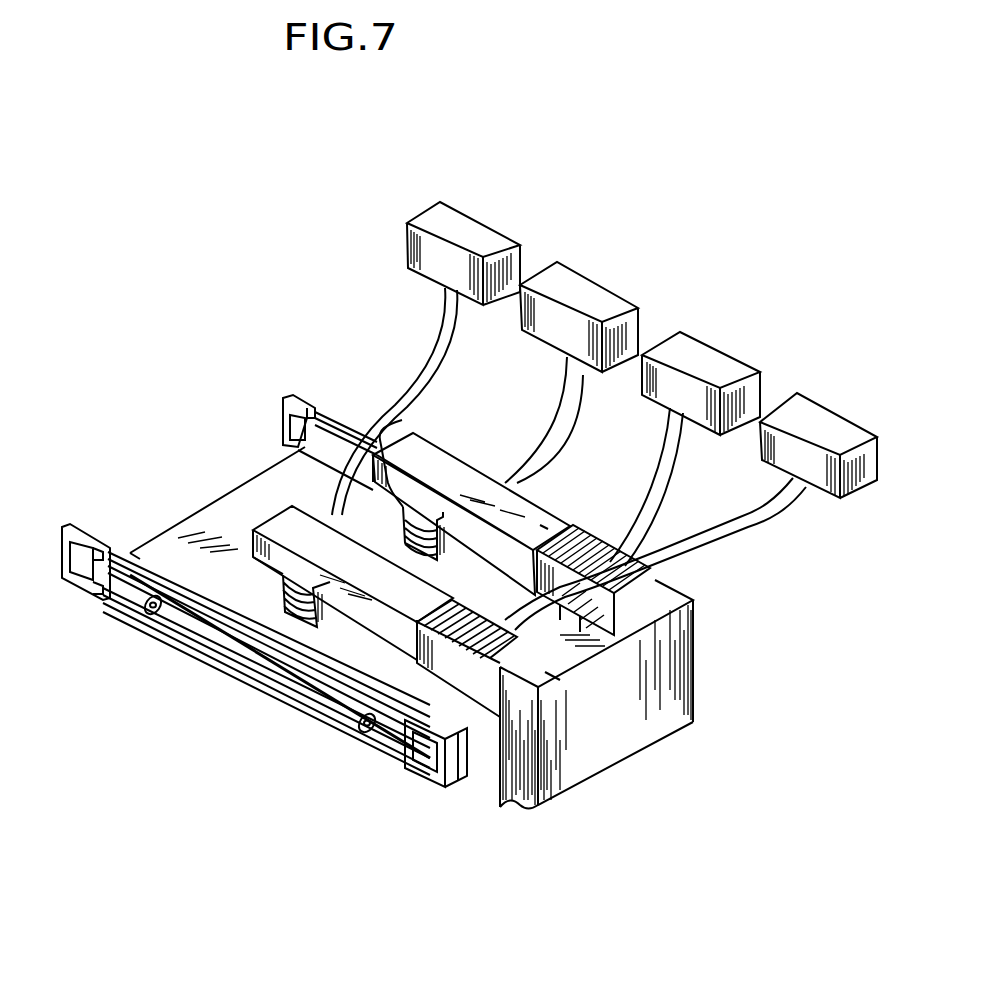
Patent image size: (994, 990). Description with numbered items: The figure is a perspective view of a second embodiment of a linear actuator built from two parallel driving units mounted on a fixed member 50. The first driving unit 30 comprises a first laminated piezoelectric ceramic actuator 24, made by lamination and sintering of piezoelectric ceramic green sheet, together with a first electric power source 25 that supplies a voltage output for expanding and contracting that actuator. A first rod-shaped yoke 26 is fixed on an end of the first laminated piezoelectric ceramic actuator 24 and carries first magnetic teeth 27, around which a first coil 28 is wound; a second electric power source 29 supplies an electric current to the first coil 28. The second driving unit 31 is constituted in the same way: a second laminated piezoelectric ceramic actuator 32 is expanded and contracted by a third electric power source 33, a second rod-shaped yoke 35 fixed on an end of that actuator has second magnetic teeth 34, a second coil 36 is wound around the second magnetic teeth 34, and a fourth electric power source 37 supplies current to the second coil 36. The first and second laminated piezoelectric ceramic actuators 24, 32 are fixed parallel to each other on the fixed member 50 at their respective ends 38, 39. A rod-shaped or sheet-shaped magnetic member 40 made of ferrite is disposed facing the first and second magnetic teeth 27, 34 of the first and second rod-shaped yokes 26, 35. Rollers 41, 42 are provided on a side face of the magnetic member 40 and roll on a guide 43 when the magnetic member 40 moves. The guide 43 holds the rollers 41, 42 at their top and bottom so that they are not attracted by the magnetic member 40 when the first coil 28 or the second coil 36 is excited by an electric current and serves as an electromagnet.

The first laminated piezoelectric ceramic actuator 24 is at (453, 658).
The first electric power source 25 is at (732, 378).
The first rod-shaped yoke 26 is at (369, 598).
The first magnetic teeth 27 is at (333, 608).
The first coil 28 is at (283, 578).
The second electric power source 29 is at (482, 243).
The first driving unit 30 is at (257, 517).
The second driving unit 31 is at (403, 432).
The second laminated piezoelectric ceramic actuator 32 is at (603, 547).
The third electric power source 33 is at (822, 424).
The second magnetic teeth 34 is at (427, 483).
The second rod-shaped yoke 35 is at (540, 525).
The second coil 36 is at (357, 462).
The fourth electric power source 37 is at (594, 302).
The end of first laminated piezoelectric ceramic actuator 38 is at (545, 672).
The end of second laminated piezoelectric ceramic actuator 39 is at (705, 596).
The magnetic member 40 is at (237, 486).
The roller 41 is at (385, 745).
The roller 42 is at (153, 625).
The guide 43 is at (285, 410).
The fixed member 50 is at (640, 727).